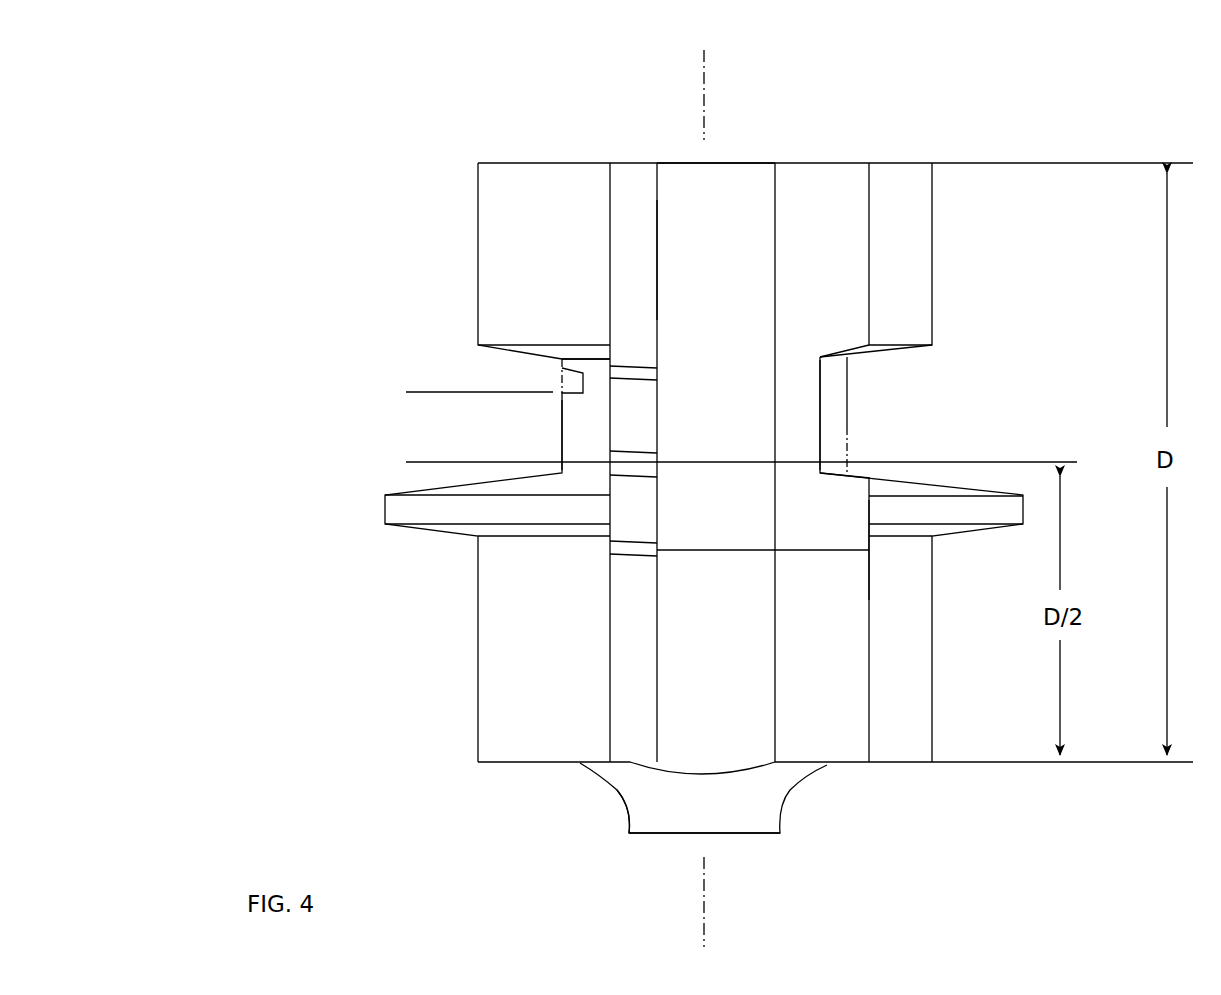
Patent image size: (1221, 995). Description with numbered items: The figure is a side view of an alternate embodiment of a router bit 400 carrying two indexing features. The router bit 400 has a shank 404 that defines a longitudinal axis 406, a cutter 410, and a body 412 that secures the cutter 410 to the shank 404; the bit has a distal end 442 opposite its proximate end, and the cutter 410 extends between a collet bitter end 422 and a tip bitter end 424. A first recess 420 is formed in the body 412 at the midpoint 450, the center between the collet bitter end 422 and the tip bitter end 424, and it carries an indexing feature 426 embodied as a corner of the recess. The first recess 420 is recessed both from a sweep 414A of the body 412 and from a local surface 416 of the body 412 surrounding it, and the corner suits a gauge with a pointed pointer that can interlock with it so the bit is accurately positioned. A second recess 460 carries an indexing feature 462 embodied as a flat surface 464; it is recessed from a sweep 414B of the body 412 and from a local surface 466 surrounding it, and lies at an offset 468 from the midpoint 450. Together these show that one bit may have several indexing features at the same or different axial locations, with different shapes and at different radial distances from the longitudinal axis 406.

The router bit 400 is at (447, 147).
The shank 404 is at (747, 803).
The longitudinal axis 406 is at (705, 97).
The cutter 410 is at (658, 252).
The body 412 is at (830, 328).
The sweep 414A is at (850, 478).
The sweep 414B is at (560, 387).
The local surface 416 is at (835, 433).
The first recess 420 is at (855, 455).
The collet bitter end 422 is at (630, 764).
The tip bitter end 424 is at (632, 163).
The indexing feature 426 is at (848, 430).
The distal end 442 is at (692, 163).
The midpoint 450 is at (997, 462).
The second recess 460 is at (546, 373).
The indexing feature 462 is at (583, 393).
The flat surface 464 is at (633, 503).
The local surface 466 is at (580, 368).
The offset 468 is at (431, 400).